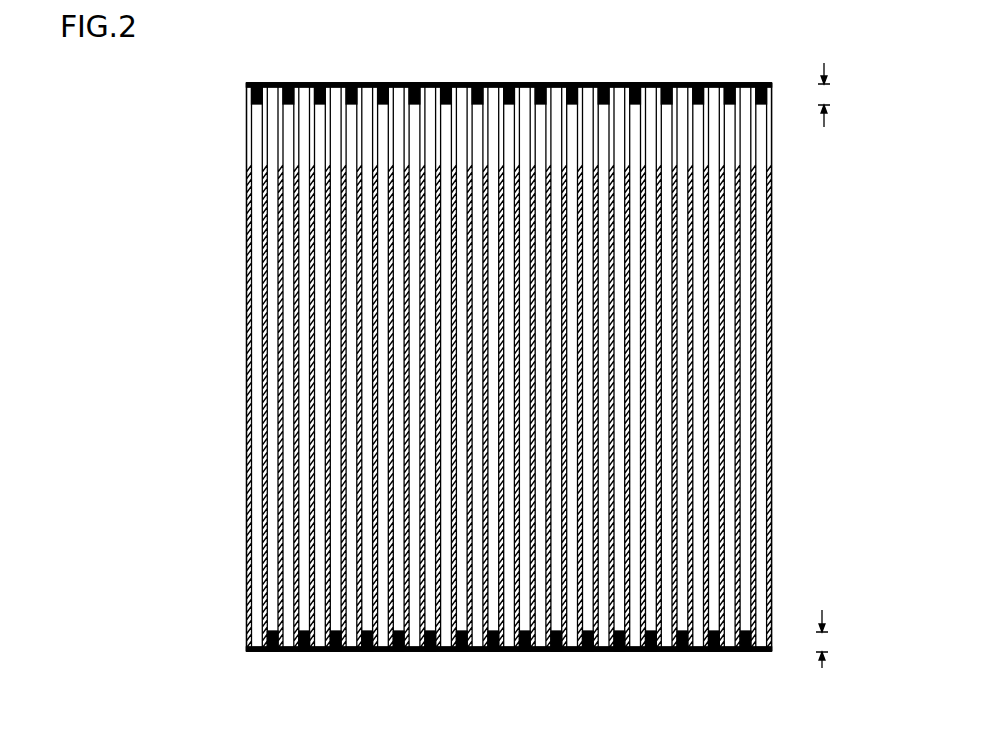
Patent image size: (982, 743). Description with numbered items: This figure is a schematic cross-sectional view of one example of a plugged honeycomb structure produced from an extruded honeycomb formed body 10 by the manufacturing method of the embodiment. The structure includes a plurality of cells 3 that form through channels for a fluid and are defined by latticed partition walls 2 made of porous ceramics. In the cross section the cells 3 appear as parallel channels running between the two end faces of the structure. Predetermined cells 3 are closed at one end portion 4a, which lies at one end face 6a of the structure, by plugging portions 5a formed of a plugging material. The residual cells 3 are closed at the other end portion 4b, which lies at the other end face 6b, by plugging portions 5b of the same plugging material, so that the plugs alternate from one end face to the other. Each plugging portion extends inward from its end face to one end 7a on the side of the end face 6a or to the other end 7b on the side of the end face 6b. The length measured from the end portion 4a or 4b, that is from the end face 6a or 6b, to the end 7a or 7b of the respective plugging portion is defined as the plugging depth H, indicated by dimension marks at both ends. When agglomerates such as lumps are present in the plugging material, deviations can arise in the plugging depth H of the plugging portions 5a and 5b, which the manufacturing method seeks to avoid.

The honeycomb formed body 10 is at (155, 313).
The partition walls 2 is at (276, 204).
The cells 3 is at (250, 156).
The one end portion 4a is at (622, 83).
The one end face 6a is at (509, 85).
The plugging portions 5a is at (377, 83).
The one end of plugging portion 7a is at (734, 105).
The other end portion 4b is at (507, 651).
The other end face 6b is at (509, 649).
The plugging portions 5b is at (432, 651).
The other end of plugging portion 7b is at (742, 626).
The plugging depth H is at (826, 98).